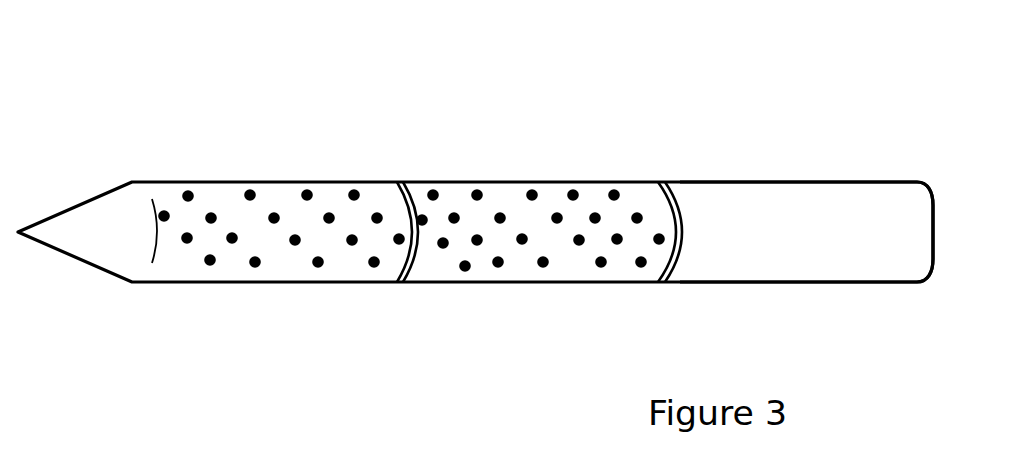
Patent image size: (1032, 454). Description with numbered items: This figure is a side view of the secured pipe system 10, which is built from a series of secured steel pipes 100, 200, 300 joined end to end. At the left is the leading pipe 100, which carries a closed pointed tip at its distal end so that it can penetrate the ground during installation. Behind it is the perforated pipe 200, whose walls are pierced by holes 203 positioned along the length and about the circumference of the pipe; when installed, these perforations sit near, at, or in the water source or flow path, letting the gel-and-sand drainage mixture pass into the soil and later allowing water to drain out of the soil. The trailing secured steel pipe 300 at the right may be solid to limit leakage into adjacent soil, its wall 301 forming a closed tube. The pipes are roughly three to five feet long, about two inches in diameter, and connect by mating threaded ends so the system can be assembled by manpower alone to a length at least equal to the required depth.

The secured pipe system 10 is at (138, 130).
The leading pipe 100 is at (279, 210).
The perforated pipe 200 is at (533, 200).
The holes 203 is at (515, 268).
The secured steel pipe 300 is at (783, 207).
The housing wall of third section 301 is at (778, 255).